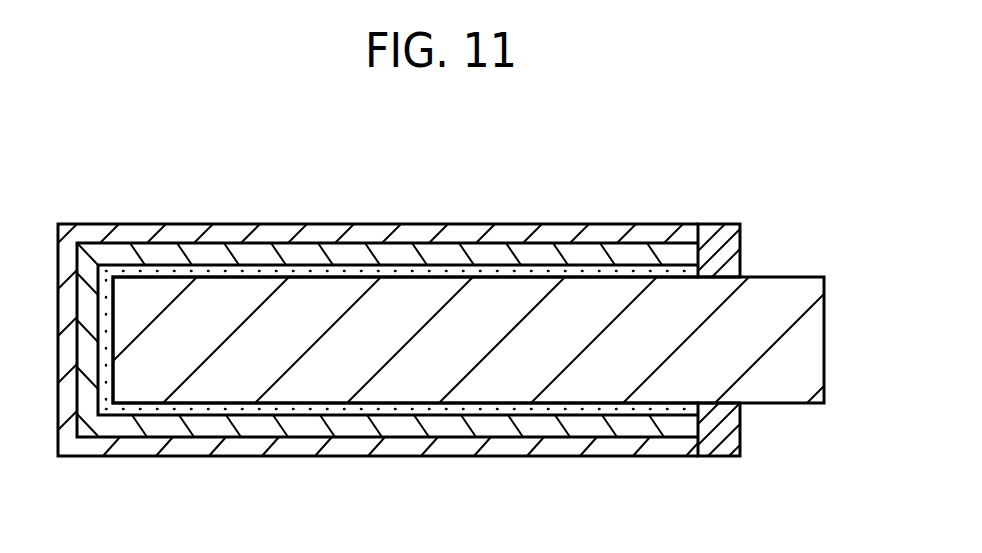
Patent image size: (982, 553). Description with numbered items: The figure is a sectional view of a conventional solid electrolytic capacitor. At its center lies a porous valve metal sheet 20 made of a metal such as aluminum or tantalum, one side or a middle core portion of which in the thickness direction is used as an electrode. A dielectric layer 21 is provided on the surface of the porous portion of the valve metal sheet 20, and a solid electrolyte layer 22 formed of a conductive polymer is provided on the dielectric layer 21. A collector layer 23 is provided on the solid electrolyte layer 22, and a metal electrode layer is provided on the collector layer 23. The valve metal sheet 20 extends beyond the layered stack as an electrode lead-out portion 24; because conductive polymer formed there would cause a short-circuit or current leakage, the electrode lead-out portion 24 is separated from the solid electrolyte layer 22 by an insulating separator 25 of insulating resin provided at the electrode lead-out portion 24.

The porous valve metal sheet 20 is at (613, 297).
The dielectric layer 21 is at (528, 270).
The solid electrolyte layer 22 is at (442, 258).
The collector layer 23 is at (355, 230).
The electrode lead-out portion 24 is at (797, 303).
The insulating separator 25 is at (722, 240).